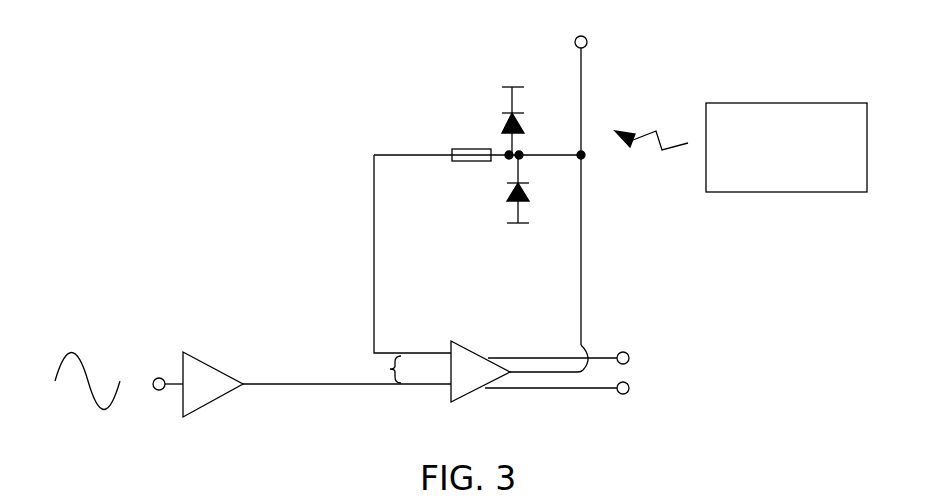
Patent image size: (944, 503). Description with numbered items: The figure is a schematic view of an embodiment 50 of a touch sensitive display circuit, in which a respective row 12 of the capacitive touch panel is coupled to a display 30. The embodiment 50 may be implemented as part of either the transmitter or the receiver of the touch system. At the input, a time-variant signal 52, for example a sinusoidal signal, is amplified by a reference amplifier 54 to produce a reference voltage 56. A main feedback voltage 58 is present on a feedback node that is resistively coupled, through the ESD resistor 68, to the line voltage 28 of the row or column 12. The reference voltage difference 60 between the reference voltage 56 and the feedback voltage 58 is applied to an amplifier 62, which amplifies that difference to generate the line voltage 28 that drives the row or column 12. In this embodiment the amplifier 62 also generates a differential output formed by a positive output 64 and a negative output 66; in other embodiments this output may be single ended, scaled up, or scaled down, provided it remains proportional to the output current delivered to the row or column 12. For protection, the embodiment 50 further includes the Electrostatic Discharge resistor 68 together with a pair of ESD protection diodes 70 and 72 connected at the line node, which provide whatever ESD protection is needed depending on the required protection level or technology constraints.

The row 12 is at (586, 37).
The line voltage 28 is at (582, 266).
The display 30 is at (843, 189).
The embodiment of a touch sensitive display 50 is at (763, 265).
The time-variant signal 52 is at (156, 390).
The reference amplifier 54 is at (213, 392).
The reference voltage 56 is at (280, 385).
The main feedback voltage 58 is at (375, 272).
The reference voltage difference 60 is at (390, 376).
The amplifier 62 is at (481, 381).
The positive output 64 is at (628, 393).
The negative output 66 is at (628, 353).
The ESD resistor 68 is at (468, 162).
The ESD protection diode 70 is at (517, 111).
The ESD protection diode 72 is at (523, 183).